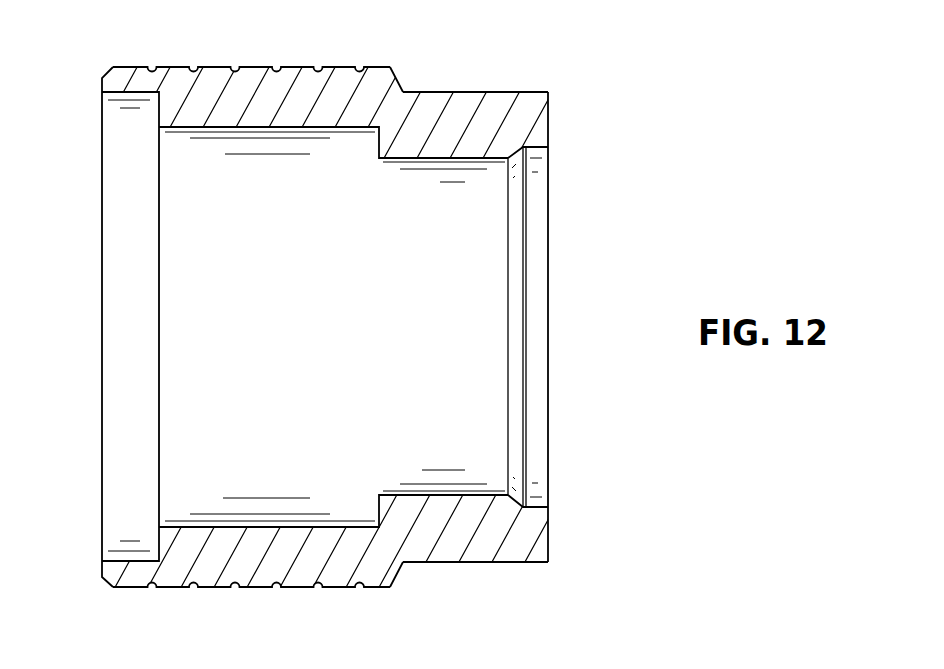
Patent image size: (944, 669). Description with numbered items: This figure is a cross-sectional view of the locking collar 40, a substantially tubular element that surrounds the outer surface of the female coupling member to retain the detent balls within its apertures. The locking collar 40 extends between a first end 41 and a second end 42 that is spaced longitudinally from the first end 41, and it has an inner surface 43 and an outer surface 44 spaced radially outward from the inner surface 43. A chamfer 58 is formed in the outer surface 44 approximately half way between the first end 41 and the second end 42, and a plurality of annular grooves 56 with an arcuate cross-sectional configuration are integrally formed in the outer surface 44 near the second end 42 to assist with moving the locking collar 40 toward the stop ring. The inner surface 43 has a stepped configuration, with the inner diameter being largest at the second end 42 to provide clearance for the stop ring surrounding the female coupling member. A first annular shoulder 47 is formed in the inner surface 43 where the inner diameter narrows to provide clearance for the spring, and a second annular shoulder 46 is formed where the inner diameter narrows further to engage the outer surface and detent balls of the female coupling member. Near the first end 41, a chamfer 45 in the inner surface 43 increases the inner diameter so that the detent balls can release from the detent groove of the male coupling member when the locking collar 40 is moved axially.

The locking collar 40 is at (592, 71).
The first end 41 is at (548, 282).
The second end 42 is at (102, 137).
The inner surface 43 is at (474, 159).
The outer surface 44 is at (467, 92).
The chamfer 45 is at (512, 500).
The second annular shoulder 46 is at (379, 148).
The first annular shoulder 47 is at (158, 107).
The annular grooves 56 is at (277, 68).
The chamfer 58 is at (398, 80).